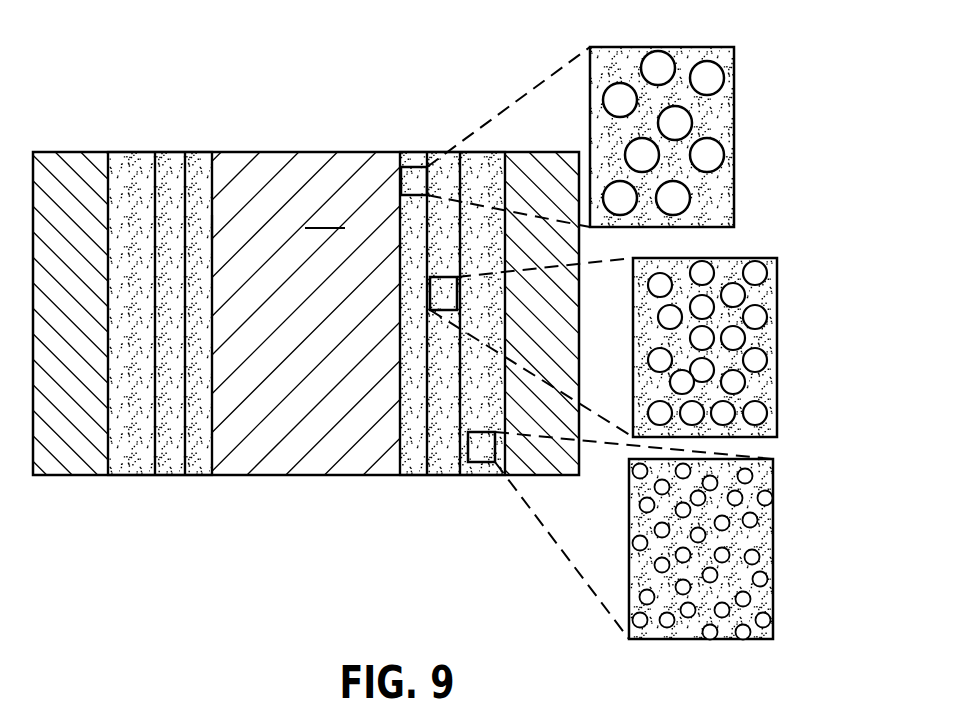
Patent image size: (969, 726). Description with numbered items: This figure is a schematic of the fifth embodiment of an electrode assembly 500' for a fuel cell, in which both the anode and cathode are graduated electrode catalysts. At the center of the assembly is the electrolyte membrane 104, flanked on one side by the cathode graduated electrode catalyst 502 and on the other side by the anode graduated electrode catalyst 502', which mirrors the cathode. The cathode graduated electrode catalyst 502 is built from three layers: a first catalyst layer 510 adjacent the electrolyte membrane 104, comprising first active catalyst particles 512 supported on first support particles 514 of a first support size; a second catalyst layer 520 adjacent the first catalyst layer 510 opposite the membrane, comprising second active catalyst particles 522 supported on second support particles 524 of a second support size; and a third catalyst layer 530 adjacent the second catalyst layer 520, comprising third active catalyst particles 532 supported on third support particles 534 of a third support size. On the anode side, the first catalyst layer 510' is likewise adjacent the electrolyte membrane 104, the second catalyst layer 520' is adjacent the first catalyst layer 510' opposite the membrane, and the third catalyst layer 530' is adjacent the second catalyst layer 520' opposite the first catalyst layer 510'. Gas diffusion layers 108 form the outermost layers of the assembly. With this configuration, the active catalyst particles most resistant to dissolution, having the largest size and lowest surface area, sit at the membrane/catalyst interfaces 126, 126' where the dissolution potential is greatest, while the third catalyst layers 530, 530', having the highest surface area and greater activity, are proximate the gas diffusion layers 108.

The electrode assembly 500' is at (306, 249).
The gas diffusion layers 108 is at (50, 453).
The electrolyte membrane 104 is at (290, 453).
The membrane/catalyst interface 126' is at (239, 154).
The membrane/catalyst interface 126 is at (320, 148).
The graduated electrode catalyst 502' is at (160, 287).
The third catalyst layer 530' is at (126, 350).
The second catalyst layer 520' is at (176, 350).
The first catalyst layer 510' is at (221, 350).
The graduated electrode catalyst 502 is at (452, 287).
The first catalyst layer 510 is at (394, 350).
The second catalyst layer 520 is at (441, 350).
The third catalyst layer 530 is at (488, 350).
The first active catalyst particles 512 is at (673, 122).
The first support particles 514 is at (723, 193).
The second active catalyst particles 522 is at (755, 275).
The second support particles 524 is at (758, 388).
The third active catalyst particles 532 is at (765, 498).
The third support particles 534 is at (748, 573).